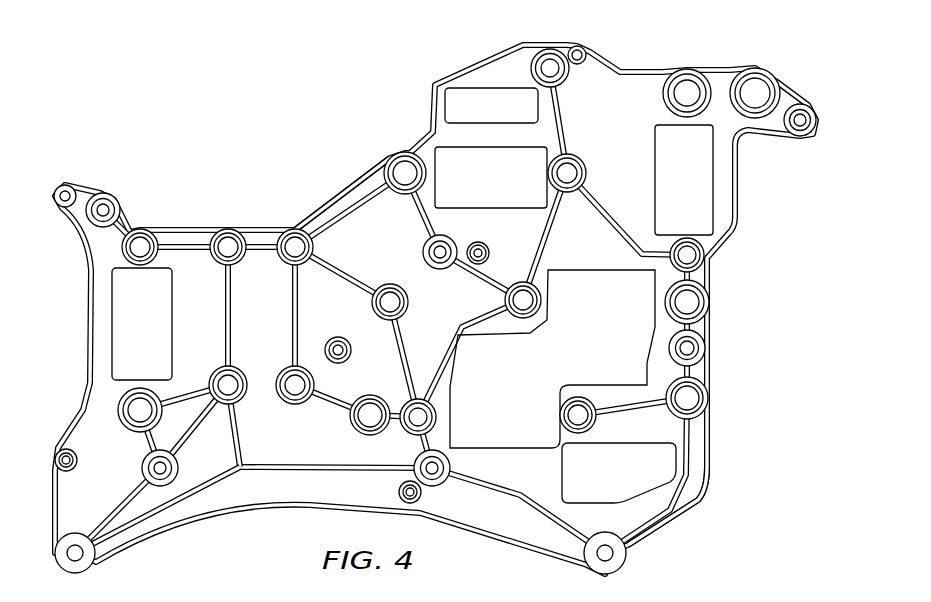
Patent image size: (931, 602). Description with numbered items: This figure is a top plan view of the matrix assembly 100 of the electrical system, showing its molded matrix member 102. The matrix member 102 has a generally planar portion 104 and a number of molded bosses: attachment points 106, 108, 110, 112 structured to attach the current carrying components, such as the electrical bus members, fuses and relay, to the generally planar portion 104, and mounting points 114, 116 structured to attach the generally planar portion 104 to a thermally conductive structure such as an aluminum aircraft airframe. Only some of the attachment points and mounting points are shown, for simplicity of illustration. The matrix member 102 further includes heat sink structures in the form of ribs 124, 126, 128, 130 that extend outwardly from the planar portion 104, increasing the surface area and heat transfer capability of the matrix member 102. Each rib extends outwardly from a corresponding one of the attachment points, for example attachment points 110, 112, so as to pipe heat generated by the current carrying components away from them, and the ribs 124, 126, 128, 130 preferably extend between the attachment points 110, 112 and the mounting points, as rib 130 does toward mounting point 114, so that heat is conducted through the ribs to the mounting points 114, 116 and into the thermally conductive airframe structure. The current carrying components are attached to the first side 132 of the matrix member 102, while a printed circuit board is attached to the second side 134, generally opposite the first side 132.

The matrix assembly 100 is at (234, 550).
The matrix member 102 is at (314, 178).
The generally planar portion 104 is at (384, 245).
The attachment point 106 is at (754, 68).
The attachment point 108 is at (681, 69).
The attachment point 110 is at (576, 150).
The attachment point 112 is at (292, 404).
The mounting point 114 is at (584, 556).
The mounting point 116 is at (55, 555).
The rib 124 is at (598, 203).
The rib 126 is at (553, 232).
The rib 128 is at (335, 390).
The rib 130 is at (487, 492).
The first side 132 is at (667, 432).
The second side 134 is at (713, 502).